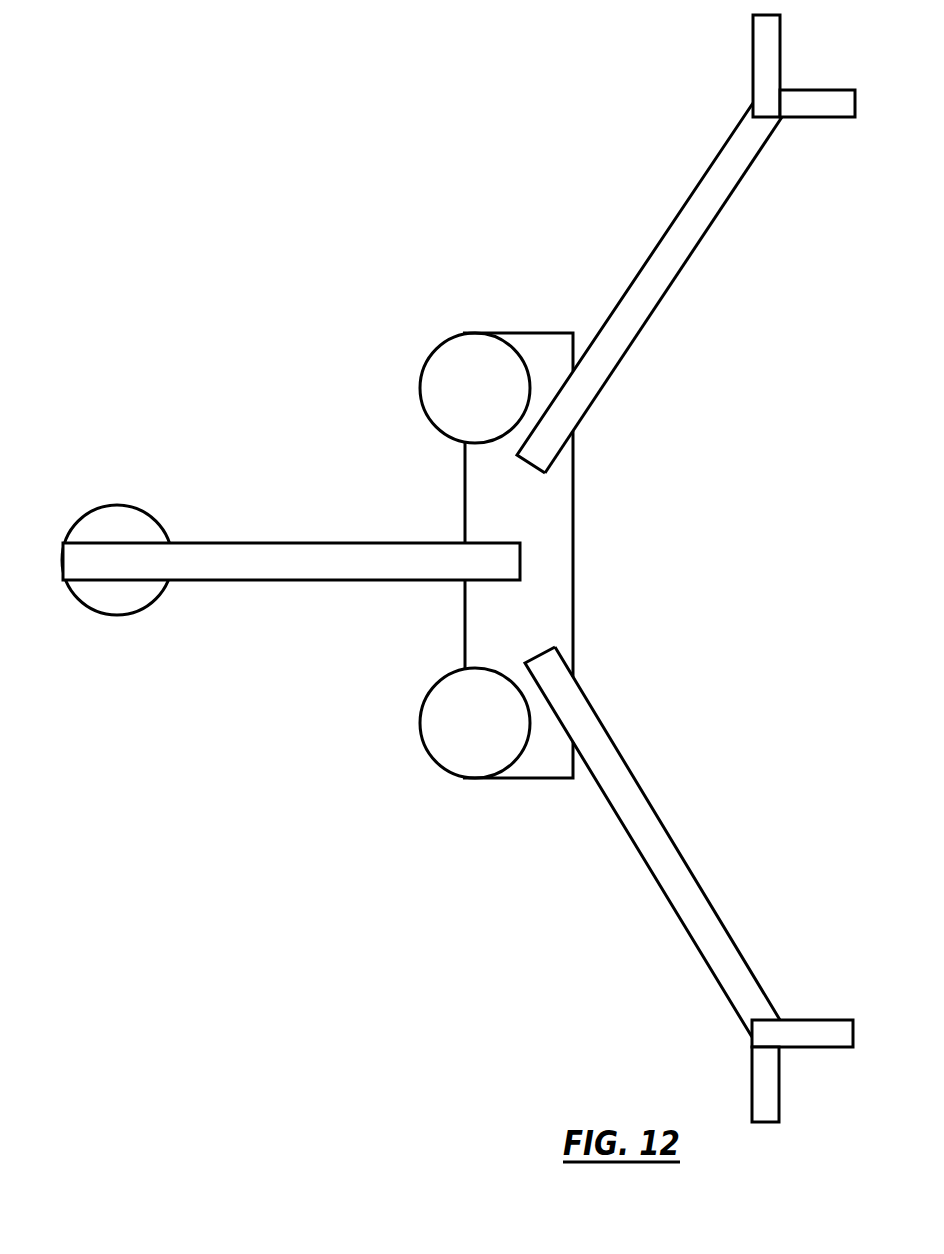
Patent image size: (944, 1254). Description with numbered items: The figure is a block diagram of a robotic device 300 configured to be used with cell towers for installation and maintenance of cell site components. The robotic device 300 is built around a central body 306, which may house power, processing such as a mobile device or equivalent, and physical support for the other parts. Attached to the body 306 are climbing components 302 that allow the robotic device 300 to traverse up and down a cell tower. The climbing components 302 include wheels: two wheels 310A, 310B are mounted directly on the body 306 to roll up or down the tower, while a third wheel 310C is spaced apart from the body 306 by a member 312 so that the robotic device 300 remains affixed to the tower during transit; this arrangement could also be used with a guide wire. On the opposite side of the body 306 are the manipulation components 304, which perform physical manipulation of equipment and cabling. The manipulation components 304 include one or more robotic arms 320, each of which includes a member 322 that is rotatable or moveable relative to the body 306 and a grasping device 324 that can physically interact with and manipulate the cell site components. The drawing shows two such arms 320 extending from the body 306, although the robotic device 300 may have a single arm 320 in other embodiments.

The robotic device 300 is at (299, 148).
The climbing components 302 is at (189, 411).
The manipulation components 304 is at (681, 61).
The body 306 is at (523, 281).
The wheel 310A is at (420, 397).
The wheel 310B is at (428, 753).
The wheel 310C is at (93, 610).
The member 312 is at (300, 580).
The robotic arm 320 is at (638, 161).
The member 322 is at (667, 280).
The grasping device 324 is at (803, 117).